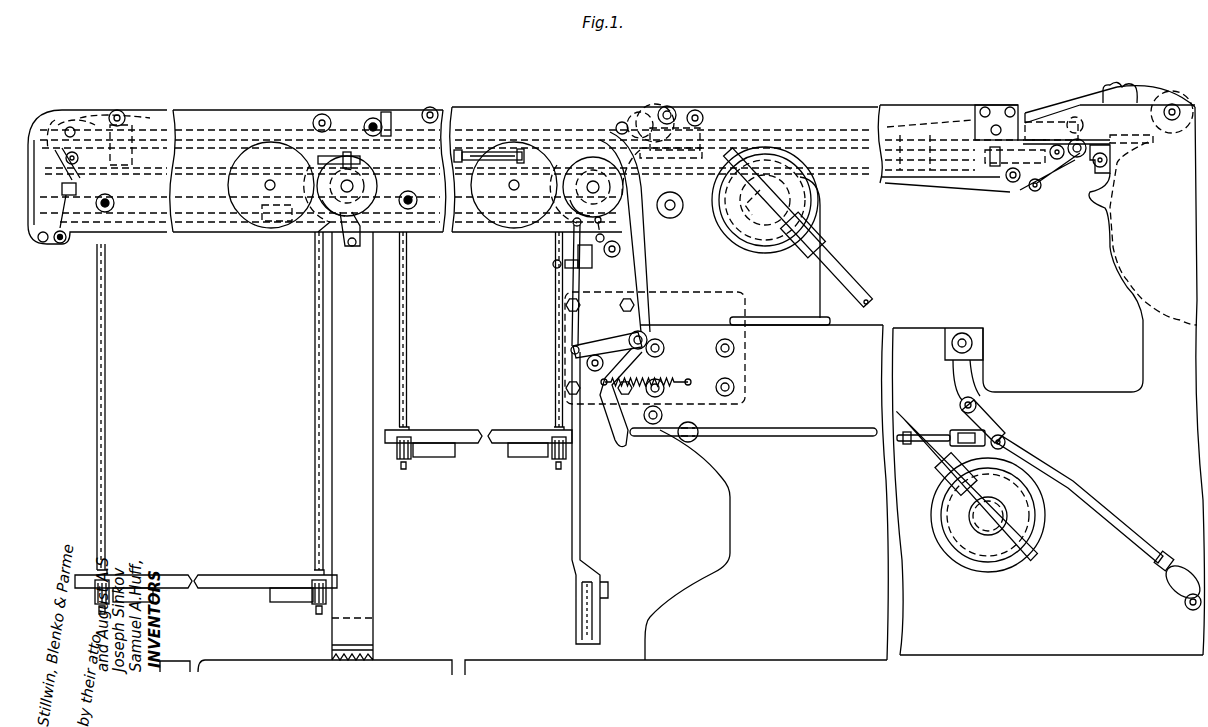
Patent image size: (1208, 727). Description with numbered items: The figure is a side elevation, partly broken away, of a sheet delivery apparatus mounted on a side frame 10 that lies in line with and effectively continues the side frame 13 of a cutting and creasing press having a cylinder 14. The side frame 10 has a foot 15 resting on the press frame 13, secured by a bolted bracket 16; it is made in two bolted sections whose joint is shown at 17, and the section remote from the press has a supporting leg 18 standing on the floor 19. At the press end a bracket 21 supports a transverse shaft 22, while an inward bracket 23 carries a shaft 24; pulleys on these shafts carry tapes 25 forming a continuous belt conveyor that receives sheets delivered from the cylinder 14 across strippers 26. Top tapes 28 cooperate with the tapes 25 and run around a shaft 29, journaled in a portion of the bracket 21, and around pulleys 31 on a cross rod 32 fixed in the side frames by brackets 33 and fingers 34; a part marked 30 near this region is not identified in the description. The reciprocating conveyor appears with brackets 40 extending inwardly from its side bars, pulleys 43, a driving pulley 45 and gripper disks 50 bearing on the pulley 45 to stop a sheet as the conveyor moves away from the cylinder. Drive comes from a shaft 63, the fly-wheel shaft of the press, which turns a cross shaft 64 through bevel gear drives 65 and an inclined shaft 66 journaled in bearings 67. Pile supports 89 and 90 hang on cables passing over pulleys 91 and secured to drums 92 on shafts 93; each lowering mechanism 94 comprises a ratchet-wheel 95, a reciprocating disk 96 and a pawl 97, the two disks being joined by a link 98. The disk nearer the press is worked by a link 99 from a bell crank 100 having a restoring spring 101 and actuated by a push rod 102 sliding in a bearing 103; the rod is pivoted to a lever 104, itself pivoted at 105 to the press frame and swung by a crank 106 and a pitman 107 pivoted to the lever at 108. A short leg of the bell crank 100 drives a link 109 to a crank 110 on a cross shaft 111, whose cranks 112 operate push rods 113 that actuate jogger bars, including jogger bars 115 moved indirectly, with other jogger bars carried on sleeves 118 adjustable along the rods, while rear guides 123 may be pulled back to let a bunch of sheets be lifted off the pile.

The side frame 10 is at (472, 232).
The side frame of the press 13 is at (1062, 400).
The cylinder 14 is at (1110, 228).
The feet 15 is at (805, 301).
The bolted brackets 16 is at (594, 398).
The joint 17 is at (388, 122).
The supporting legs 18 is at (373, 516).
The foundation or floor 19 is at (514, 670).
The brackets 21 is at (1038, 192).
The transverse shaft 22 is at (1075, 158).
The brackets 23 is at (650, 180).
The shaft 24 is at (672, 154).
The tapes 25 is at (1000, 106).
The strippers 26 is at (1128, 141).
The top tapes 28 is at (914, 124).
The shaft 29 is at (1045, 115).
The stop 30 is at (1078, 108).
The pulleys 31 is at (650, 108).
The cross rod 32 is at (700, 110).
The brackets 33 is at (705, 128).
The fingers 34 is at (672, 107).
The brackets 40 is at (1013, 183).
The pulleys 43 is at (995, 170).
The driving pulley 45 is at (620, 122).
The gripper disks 50 is at (373, 118).
The shaft 63 is at (988, 530).
The cross shaft 64 is at (726, 220).
The bevel gear drives 65 is at (752, 242).
The inclined shaft 66 is at (835, 262).
The bearings 67 is at (818, 232).
The pile support 89 is at (183, 589).
The pile support 90 is at (476, 446).
The pulleys 91 is at (276, 187).
The drums 92 is at (318, 236).
The shafts 93 is at (347, 186).
The pile lowering mechanism 94 is at (345, 226).
The ratchet-wheel 95 is at (318, 226).
The reciprocating disk 96 is at (410, 212).
The pawl 97 is at (349, 247).
The link 98 is at (480, 152).
The link 99 is at (645, 283).
The bell crank 100 is at (608, 345).
The restoring spring 101 is at (650, 384).
The push rod 102 is at (781, 427).
The bearing 103 is at (697, 438).
The lever 104 is at (960, 381).
The pivot 105 is at (962, 337).
The crank 106 is at (1186, 607).
The pitman 107 is at (1078, 485).
The pivot 108 is at (977, 405).
The link 109 is at (570, 324).
The crank 110 is at (586, 265).
The cross shaft 111 is at (620, 250).
The cranks 112 is at (606, 225).
The push rods 113 is at (193, 226).
The jogger bars 115 is at (210, 190).
The sleeves 118 is at (286, 222).
The rear guides 123 is at (55, 158).